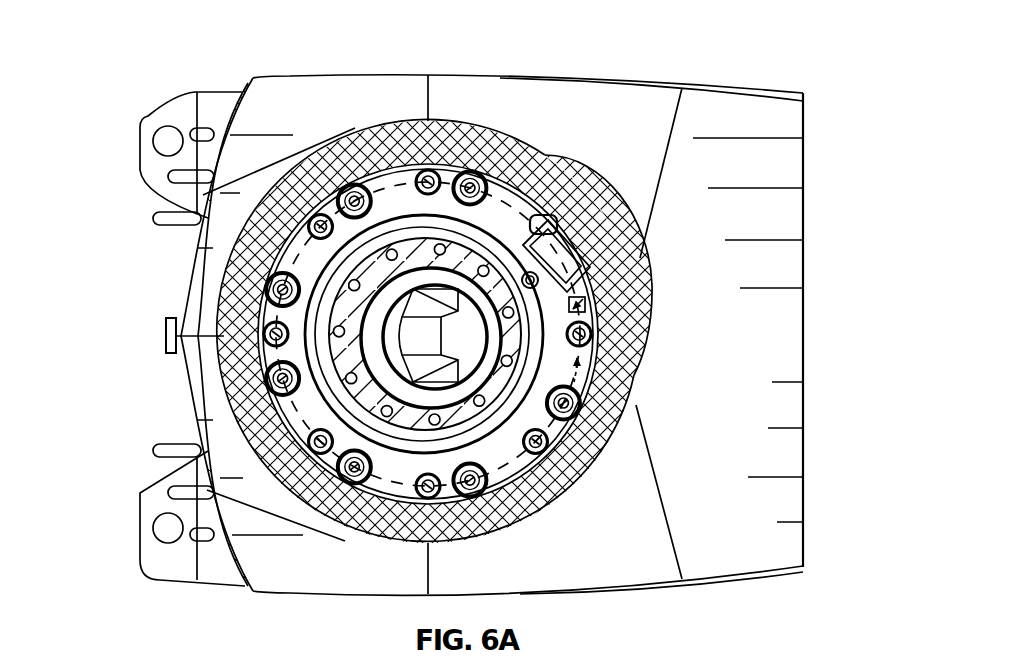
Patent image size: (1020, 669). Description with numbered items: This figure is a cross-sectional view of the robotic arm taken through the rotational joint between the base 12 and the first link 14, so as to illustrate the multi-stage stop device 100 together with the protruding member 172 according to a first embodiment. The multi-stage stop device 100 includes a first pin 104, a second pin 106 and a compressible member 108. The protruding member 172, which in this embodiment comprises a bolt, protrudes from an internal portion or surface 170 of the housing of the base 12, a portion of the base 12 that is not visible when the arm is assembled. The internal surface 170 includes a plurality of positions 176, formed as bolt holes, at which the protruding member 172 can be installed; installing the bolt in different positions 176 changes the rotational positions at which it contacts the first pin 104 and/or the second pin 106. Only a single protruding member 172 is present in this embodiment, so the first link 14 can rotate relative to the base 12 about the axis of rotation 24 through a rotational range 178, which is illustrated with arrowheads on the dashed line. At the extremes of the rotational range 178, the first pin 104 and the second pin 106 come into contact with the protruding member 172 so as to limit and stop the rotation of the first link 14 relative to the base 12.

The multi-stage stop device 100 is at (147, 38).
The base 12 is at (493, 90).
The first link 14 is at (500, 158).
The axis of rotation 24 is at (443, 336).
The first pin 104 is at (582, 302).
The second pin 106 is at (541, 213).
The compressible member 108 is at (568, 255).
The internal portion or surface of the housing 170 is at (293, 248).
The protruding member 172 is at (582, 337).
The positions 176 is at (310, 226).
The rotational range 178 is at (426, 178).